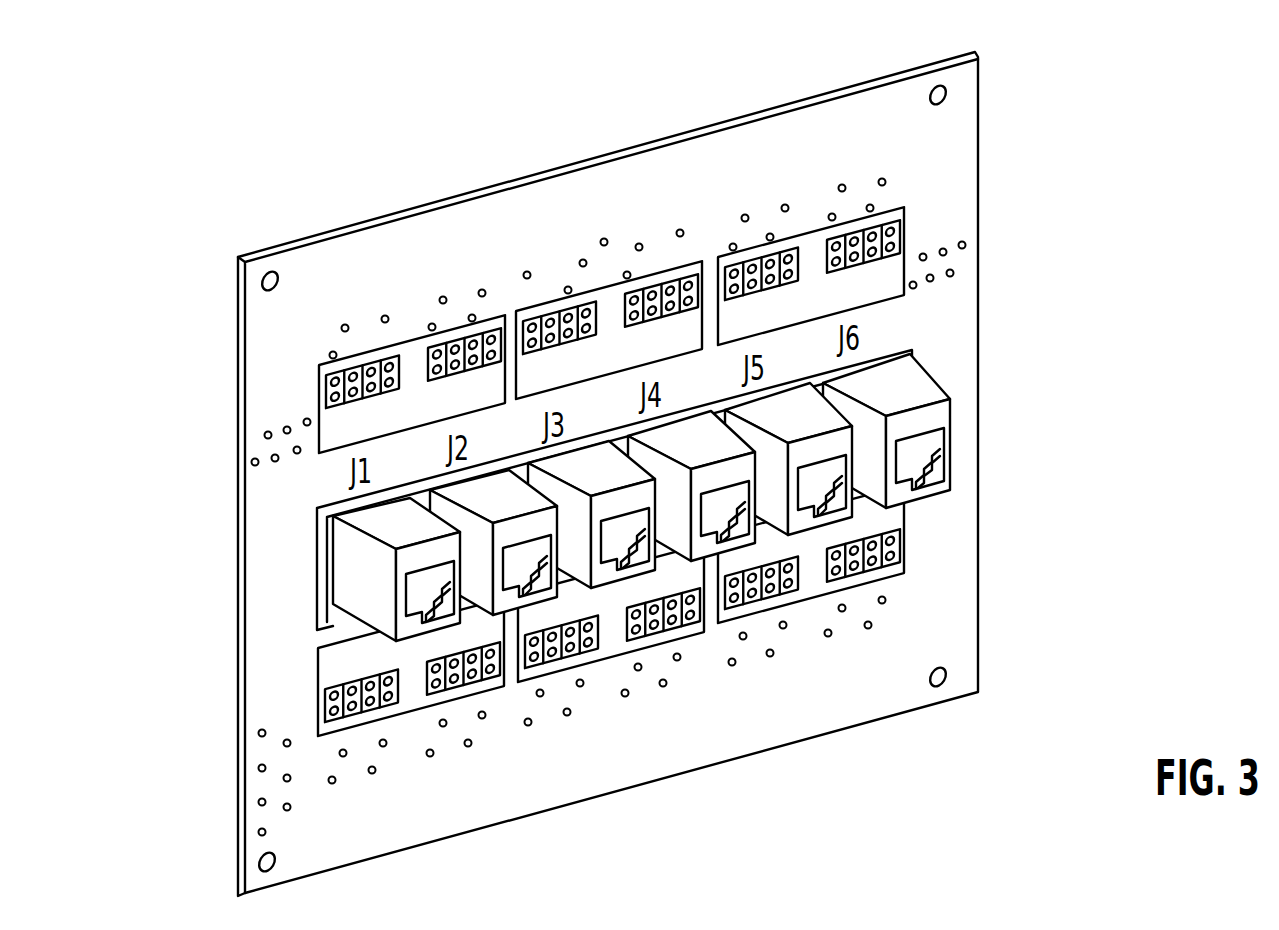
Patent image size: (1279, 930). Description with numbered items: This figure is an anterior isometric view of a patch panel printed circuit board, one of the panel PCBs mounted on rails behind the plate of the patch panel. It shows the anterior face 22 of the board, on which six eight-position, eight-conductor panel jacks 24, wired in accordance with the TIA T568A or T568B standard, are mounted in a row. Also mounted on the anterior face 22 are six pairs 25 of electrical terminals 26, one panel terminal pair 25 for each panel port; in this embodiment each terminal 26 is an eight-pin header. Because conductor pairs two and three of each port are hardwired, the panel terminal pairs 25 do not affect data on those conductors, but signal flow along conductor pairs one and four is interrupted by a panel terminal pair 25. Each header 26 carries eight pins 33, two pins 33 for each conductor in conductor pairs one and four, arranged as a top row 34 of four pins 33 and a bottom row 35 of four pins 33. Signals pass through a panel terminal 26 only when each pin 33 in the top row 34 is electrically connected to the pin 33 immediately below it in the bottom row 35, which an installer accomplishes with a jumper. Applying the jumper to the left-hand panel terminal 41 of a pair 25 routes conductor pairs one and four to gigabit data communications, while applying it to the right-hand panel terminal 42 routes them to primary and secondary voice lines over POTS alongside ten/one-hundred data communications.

The anterior face 22 is at (940, 592).
The jack 24 is at (663, 437).
The pair of electrical terminals 25 is at (525, 454).
The electrical terminal 26 is at (331, 268).
The pin 33 is at (340, 730).
The top row 34 is at (334, 381).
The bottom row 35 is at (333, 402).
The left-hand panel terminal 41 is at (331, 398).
The right-hand panel terminal 42 is at (485, 336).